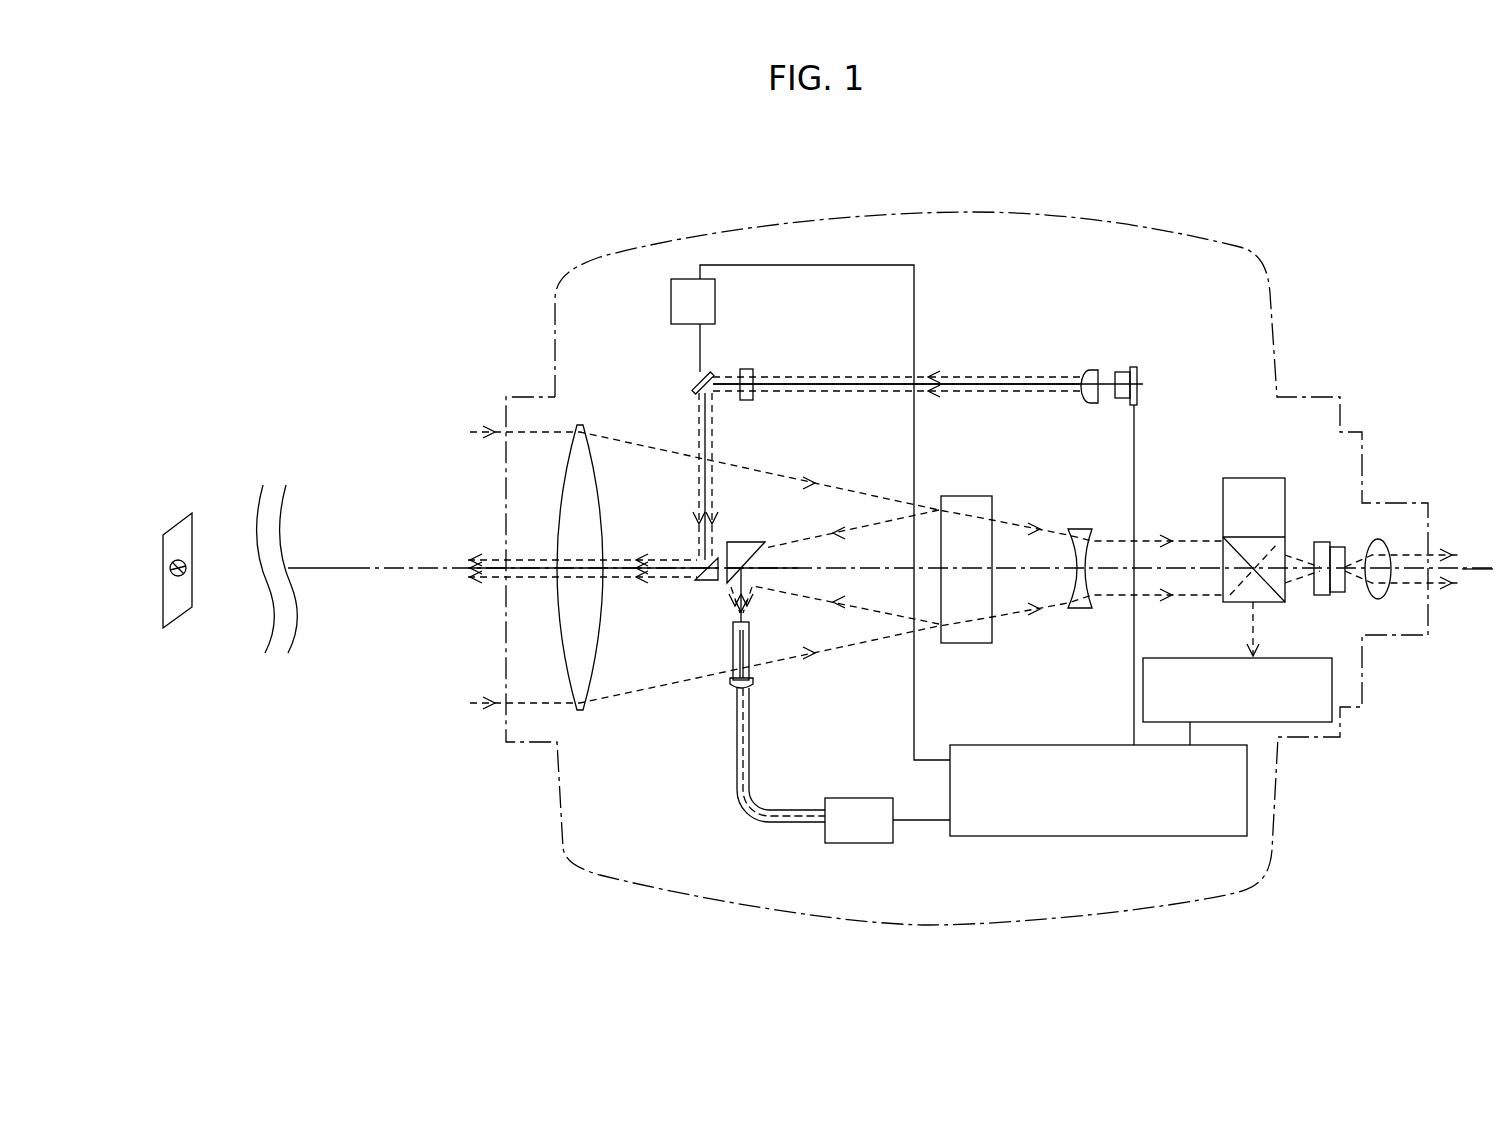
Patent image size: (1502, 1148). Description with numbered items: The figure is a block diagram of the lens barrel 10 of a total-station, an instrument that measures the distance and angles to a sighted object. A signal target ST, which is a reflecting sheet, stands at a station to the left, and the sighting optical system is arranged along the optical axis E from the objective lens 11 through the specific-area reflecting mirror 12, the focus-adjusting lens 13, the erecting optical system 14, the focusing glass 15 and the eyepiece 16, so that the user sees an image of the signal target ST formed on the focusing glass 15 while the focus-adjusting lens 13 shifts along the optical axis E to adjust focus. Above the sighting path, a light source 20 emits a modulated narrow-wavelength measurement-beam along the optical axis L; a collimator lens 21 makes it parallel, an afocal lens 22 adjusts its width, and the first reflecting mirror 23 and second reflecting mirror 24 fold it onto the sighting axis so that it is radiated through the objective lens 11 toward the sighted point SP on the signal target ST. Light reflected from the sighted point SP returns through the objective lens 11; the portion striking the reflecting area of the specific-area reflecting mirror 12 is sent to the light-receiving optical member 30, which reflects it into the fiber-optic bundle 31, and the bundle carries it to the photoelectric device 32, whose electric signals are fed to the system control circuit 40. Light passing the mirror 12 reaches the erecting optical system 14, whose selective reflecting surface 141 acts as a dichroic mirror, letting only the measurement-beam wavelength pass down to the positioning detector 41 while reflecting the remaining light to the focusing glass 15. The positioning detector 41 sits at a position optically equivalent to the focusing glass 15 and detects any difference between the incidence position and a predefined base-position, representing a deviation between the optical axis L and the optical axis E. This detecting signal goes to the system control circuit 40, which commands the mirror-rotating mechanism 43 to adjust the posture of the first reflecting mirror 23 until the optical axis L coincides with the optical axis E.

The lens barrel 10 is at (1036, 213).
The objective lens 11 is at (565, 461).
The specific-area reflecting mirror 12 is at (968, 496).
The focus-adjusting lens 13 is at (1080, 529).
The erecting optical system 14 is at (1252, 478).
The selective reflecting surface 141 is at (1225, 553).
The focusing glass 15 is at (1332, 542).
The eyepiece 16 is at (1368, 596).
The light source 20 is at (1125, 367).
The collimator lens 21 is at (1091, 368).
The afocal lens 22 is at (746, 369).
The first reflecting mirror 23 is at (690, 385).
The second reflecting mirror 24 is at (706, 583).
The light-receiving optical member 30 is at (748, 542).
The fiber-optic bundle 31 is at (750, 727).
The photoelectric device 32 is at (860, 843).
The system control circuit 40 is at (1096, 836).
The positioning detector 41 is at (1190, 658).
The mirror-rotating mechanism 43 is at (670, 304).
The optical axis of the light-transmitting optical system L is at (830, 375).
The optical axis of the sighting optical system E is at (890, 554).
The signal target ST is at (178, 527).
The sighted point SP is at (186, 572).